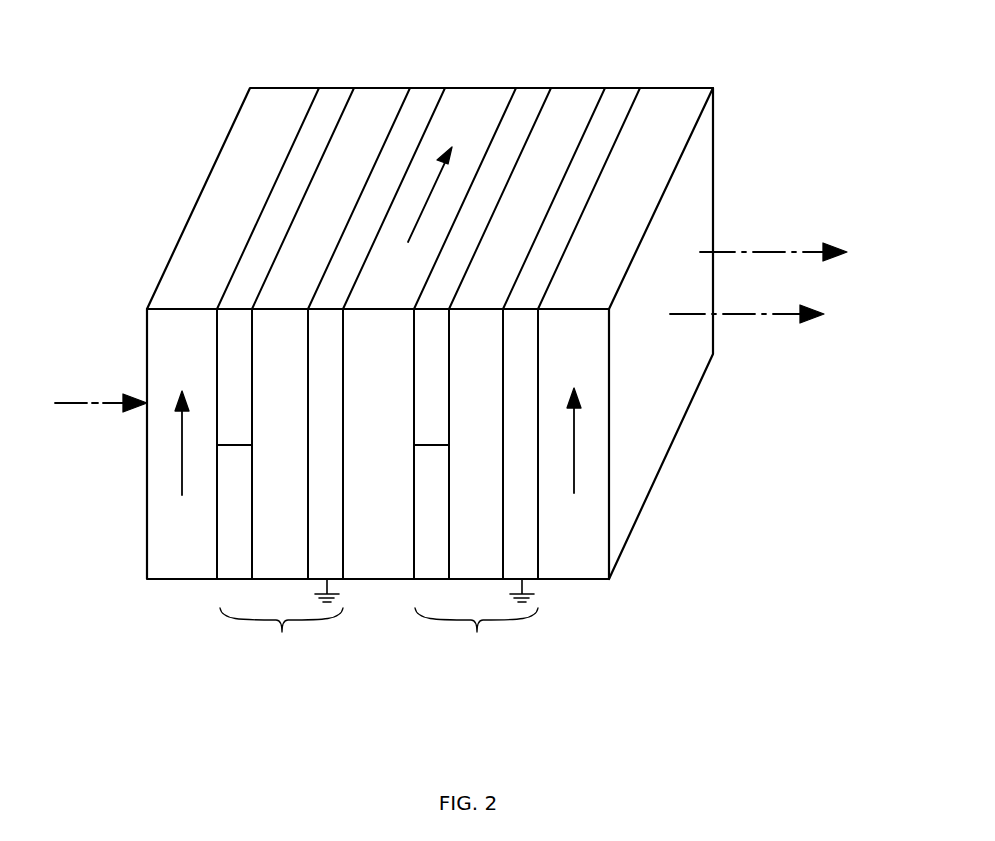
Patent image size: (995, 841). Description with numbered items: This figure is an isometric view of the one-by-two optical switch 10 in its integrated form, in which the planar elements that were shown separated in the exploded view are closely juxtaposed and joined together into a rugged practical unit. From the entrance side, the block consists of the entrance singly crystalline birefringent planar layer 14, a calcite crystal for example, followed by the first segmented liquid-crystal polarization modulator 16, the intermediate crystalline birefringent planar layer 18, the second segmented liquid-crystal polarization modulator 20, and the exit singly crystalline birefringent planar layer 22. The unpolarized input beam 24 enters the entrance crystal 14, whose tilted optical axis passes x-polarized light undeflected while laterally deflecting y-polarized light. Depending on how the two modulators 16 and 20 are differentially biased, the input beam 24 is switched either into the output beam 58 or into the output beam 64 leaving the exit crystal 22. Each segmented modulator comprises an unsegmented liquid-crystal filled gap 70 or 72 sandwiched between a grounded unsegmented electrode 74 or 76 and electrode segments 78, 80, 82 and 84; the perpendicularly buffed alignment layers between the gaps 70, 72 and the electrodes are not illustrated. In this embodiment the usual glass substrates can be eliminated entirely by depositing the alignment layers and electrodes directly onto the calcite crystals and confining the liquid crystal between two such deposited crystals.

The 1×2 optical switch 10 is at (706, 511).
The entrance singly crystalline birefringent planar layer 14 is at (282, 97).
The first segmented liquid-crystal polarization modulator 16 is at (281, 622).
The intermediate crystalline birefringent planar layer 18 is at (473, 97).
The second segmented liquid-crystal polarization modulator 20 is at (476, 622).
The exit singly crystalline birefringent planar layer 22 is at (672, 95).
The beam 24 is at (107, 405).
The output beam 58 is at (778, 318).
The output beam 64 is at (781, 250).
The unsegmented liquid-crystal filled gap 70 is at (267, 481).
The unsegmented liquid-crystal filled gap 72 is at (464, 480).
The grounded unsegmented electrode 74 is at (332, 483).
The grounded unsegmented electrode 76 is at (527, 483).
The electrode segment 78 is at (227, 563).
The electrode segment 80 is at (227, 382).
The electrode segment 82 is at (422, 487).
The electrode segment 84 is at (422, 381).